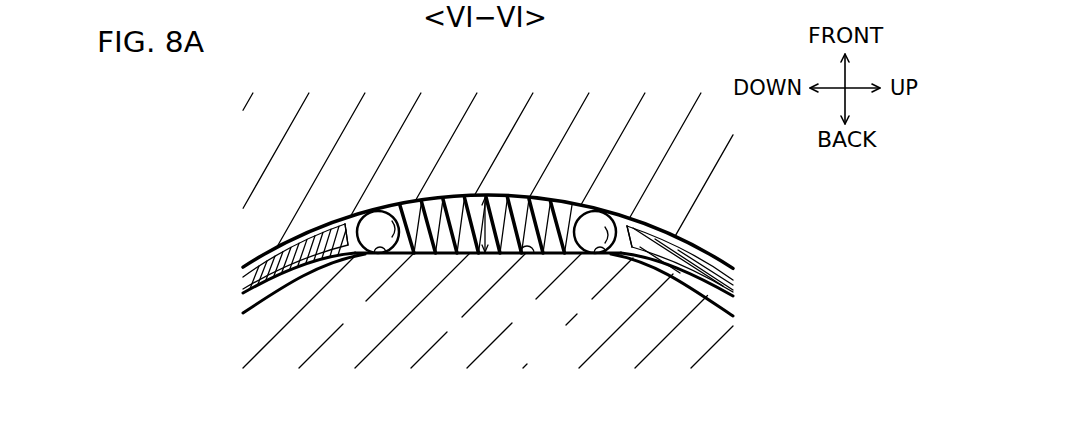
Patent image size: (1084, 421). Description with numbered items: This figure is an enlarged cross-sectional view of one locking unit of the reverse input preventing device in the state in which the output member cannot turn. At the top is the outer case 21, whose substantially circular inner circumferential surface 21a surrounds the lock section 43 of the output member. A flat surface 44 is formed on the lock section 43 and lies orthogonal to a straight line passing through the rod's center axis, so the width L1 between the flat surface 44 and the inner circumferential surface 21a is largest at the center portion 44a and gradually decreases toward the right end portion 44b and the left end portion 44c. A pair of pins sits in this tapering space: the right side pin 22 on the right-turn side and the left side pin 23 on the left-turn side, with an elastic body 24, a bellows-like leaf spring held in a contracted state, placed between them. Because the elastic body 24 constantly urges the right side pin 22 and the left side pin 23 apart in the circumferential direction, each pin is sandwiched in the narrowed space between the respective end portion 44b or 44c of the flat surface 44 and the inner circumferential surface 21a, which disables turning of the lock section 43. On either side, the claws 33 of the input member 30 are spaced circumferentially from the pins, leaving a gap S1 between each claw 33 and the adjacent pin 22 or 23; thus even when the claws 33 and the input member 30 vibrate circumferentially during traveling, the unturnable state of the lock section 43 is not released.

The outer case 21 is at (537, 144).
The inner circumferential surface 21a is at (455, 212).
The right side pin 22 is at (594, 223).
The left side pin 23 is at (378, 218).
The elastic body 24 is at (562, 216).
The input member 30 is at (527, 265).
The claw 33 is at (266, 253).
The lock section 43 is at (458, 329).
The flat surface 44 is at (487, 303).
The center portion of the flat surface 44a is at (524, 258).
The right end portion of the flat surface 44b is at (601, 258).
The left end portion of the flat surface 44c is at (380, 258).
The width L1 is at (484, 196).
The gap S1 is at (346, 220).